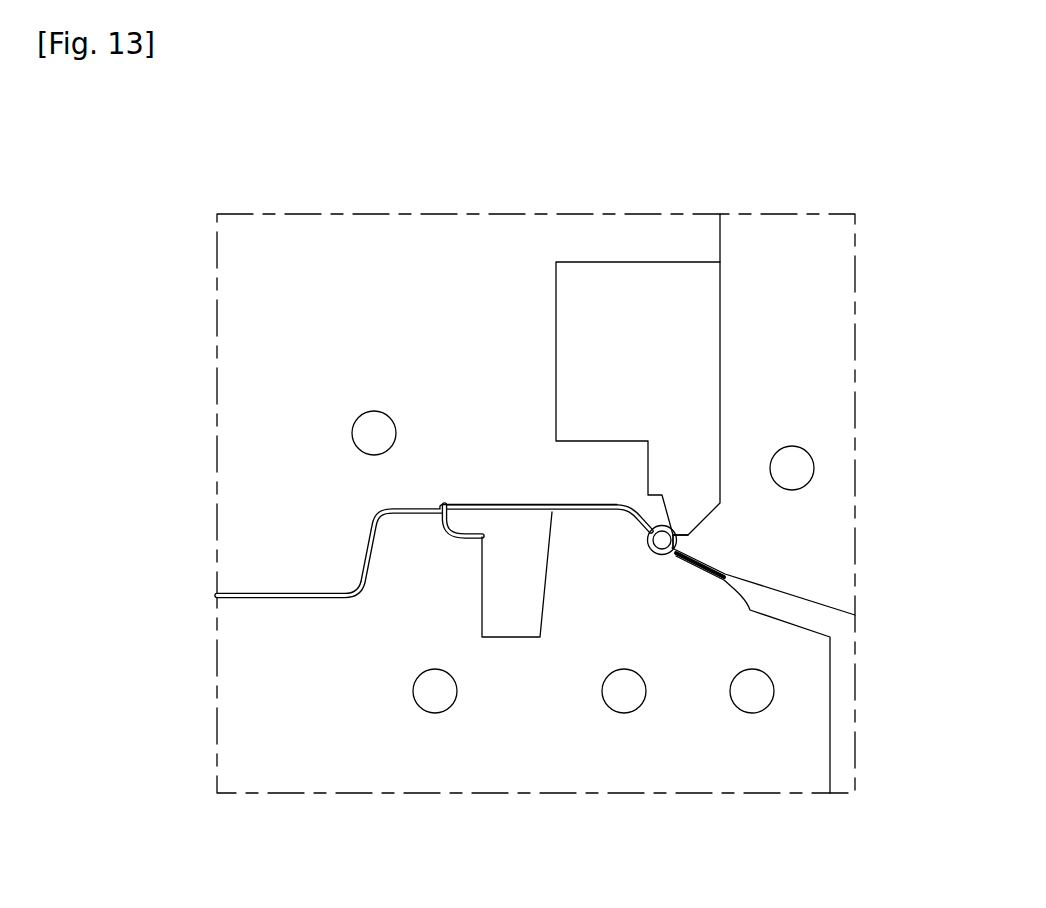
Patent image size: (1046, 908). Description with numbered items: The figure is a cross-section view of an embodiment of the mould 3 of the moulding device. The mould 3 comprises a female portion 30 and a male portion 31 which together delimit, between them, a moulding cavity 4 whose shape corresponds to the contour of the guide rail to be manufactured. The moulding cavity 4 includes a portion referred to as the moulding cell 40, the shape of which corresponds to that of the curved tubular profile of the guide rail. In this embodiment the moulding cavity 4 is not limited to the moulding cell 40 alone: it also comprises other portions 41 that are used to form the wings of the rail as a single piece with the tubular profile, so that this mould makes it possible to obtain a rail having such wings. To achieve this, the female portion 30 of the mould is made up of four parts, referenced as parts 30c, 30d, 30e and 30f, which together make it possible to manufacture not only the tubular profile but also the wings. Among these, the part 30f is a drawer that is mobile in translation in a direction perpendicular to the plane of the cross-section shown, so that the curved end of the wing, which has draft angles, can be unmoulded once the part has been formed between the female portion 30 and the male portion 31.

The mould 3 is at (631, 200).
The female portion 30 is at (532, 822).
The part of the female portion 30c is at (306, 262).
The part of the female portion 30d is at (743, 762).
The part of the female portion 30e is at (813, 345).
The drawer 30f is at (509, 605).
The male portion 31 is at (712, 548).
The moulding cavity 4 is at (562, 509).
The moulding cell 40 is at (663, 556).
The other portions of the moulding cavity 41 is at (483, 505).